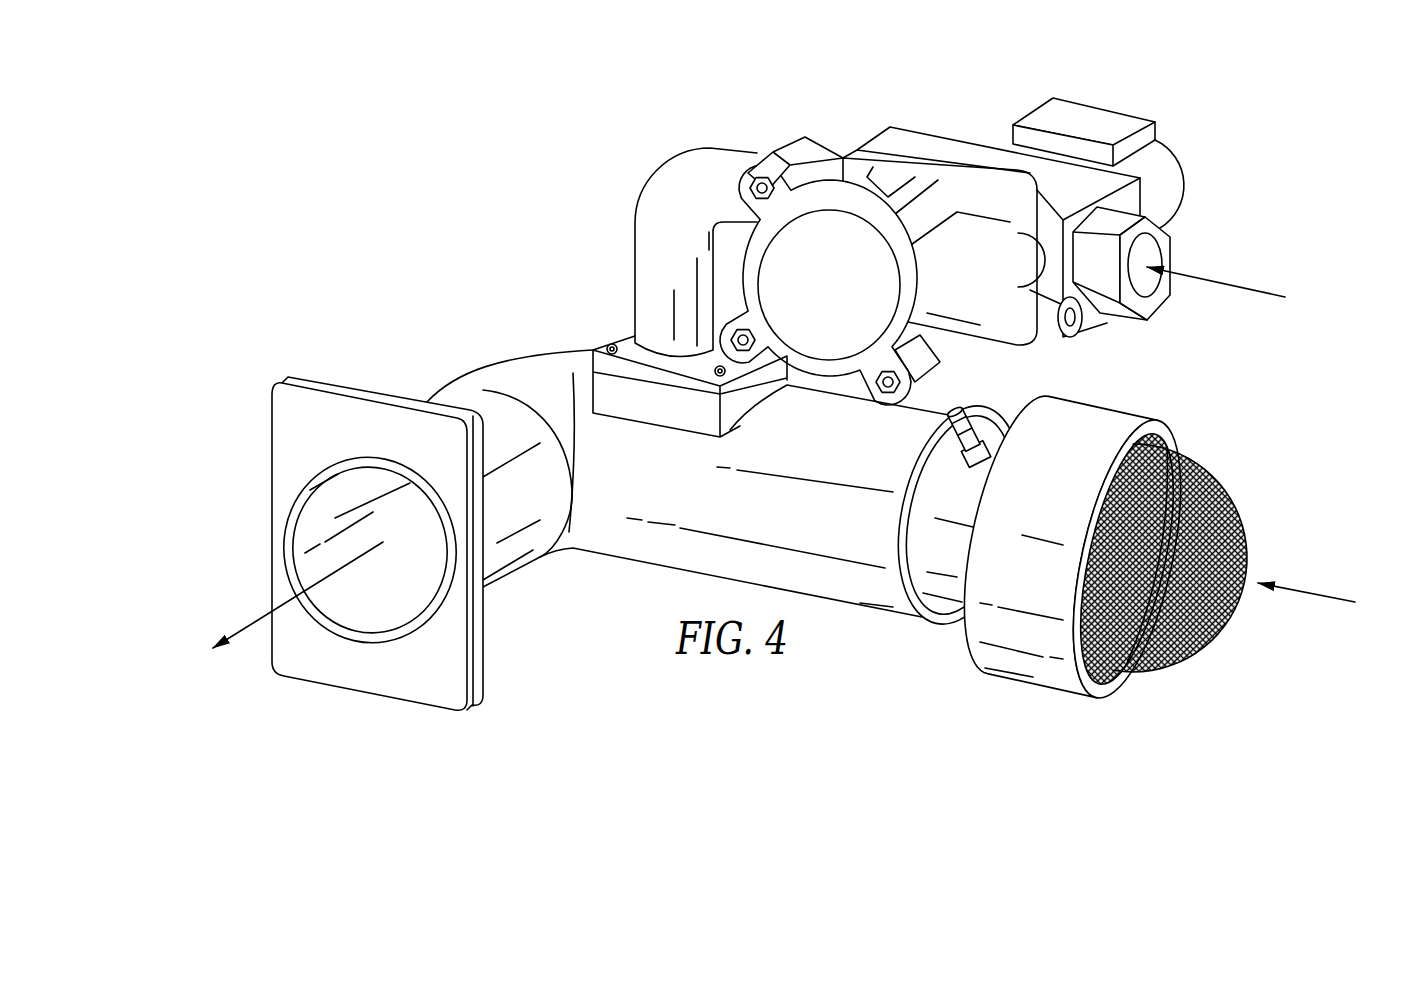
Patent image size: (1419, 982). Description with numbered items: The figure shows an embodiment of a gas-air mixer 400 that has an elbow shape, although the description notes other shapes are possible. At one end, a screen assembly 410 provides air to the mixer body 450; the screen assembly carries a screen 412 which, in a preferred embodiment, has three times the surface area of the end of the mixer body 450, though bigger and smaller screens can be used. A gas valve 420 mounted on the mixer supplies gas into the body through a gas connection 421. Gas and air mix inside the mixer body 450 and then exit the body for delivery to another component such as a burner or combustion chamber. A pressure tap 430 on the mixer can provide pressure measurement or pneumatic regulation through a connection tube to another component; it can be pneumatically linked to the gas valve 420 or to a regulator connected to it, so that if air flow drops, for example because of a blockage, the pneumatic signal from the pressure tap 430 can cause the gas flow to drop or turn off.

The gas-air mixer 400 is at (463, 147).
The screen assembly 410 is at (1224, 437).
The screen 412 is at (1195, 658).
The gas valve 420 is at (1100, 103).
The gas connection 421 is at (633, 302).
The pressure tap 430 is at (963, 411).
The mixer body 450 is at (373, 348).